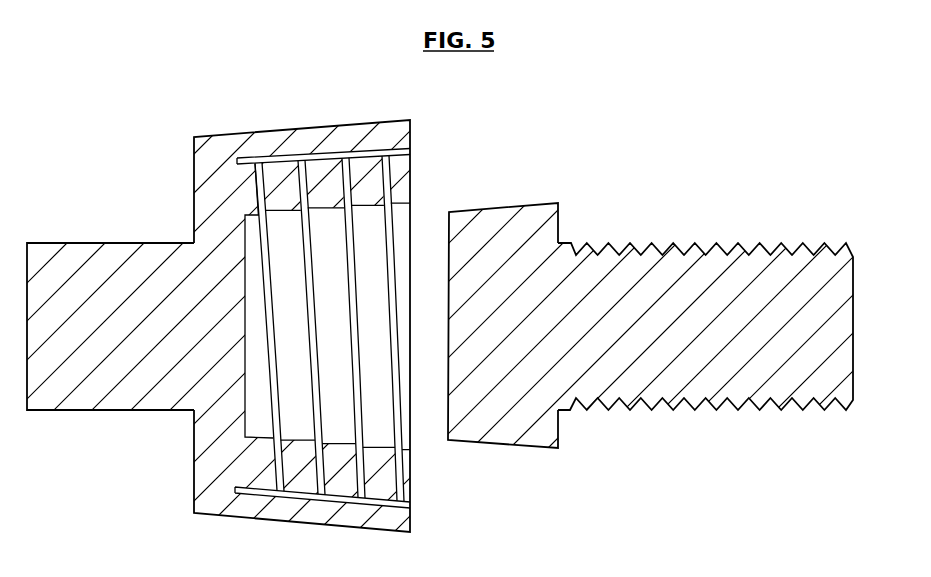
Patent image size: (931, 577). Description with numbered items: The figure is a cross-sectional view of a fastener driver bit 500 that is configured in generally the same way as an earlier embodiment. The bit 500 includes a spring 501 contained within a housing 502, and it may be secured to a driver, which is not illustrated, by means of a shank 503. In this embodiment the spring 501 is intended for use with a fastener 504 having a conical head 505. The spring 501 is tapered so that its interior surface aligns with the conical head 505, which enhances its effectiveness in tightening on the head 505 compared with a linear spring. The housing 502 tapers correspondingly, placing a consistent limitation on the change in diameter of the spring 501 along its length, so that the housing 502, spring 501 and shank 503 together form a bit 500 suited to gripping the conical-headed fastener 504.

The fastener driver bit 500 is at (465, 330).
The spring 501 is at (277, 243).
The housing 502 is at (255, 518).
The shank 503 is at (122, 411).
The fastener 504 is at (467, 314).
The conical head 505 is at (493, 446).